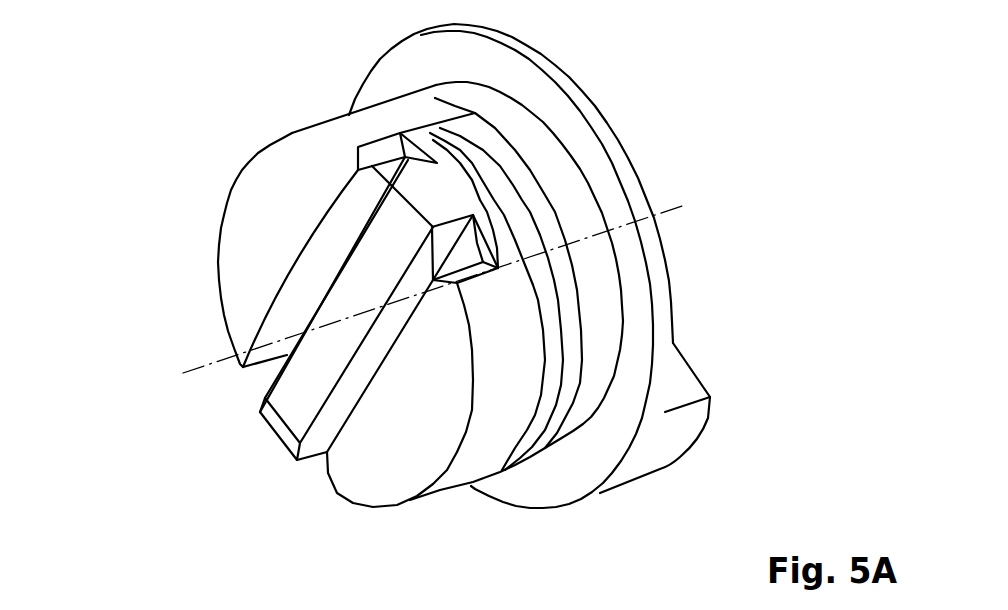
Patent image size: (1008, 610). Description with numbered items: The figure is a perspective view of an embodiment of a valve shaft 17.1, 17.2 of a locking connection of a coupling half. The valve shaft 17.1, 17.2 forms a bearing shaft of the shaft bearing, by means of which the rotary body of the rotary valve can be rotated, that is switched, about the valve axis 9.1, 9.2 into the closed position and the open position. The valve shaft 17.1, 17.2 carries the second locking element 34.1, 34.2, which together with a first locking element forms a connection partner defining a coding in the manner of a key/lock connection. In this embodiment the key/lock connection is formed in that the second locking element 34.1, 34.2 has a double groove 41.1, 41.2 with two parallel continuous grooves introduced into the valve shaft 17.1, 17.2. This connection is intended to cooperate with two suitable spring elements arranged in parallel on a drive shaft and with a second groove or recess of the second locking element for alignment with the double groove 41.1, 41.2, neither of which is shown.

The valve axis 9.1 is at (394, 289).
The valve axis 9.2 is at (213, 360).
The valve shaft 17.1 is at (330, 123).
The valve shaft 17.2 is at (366, 336).
The second locking element 34.1 is at (215, 306).
The second locking element 34.2 is at (334, 284).
The double groove 41.1 is at (473, 215).
The double groove 41.2 is at (465, 249).